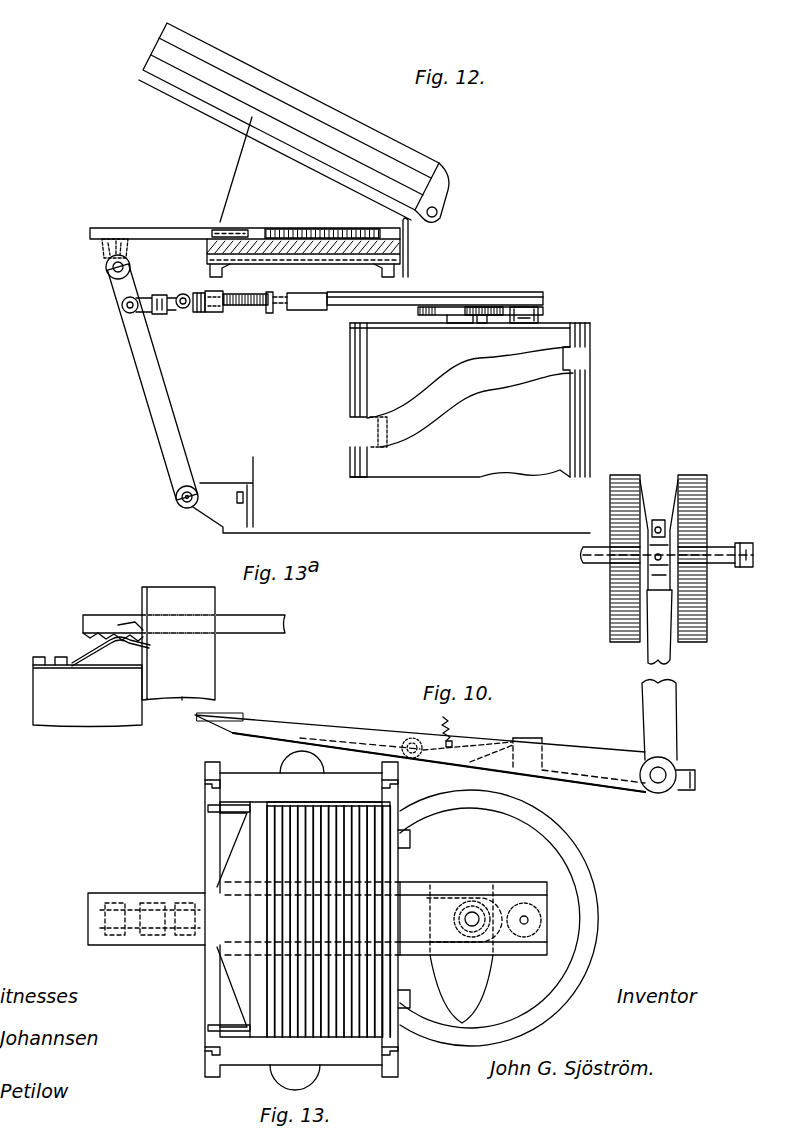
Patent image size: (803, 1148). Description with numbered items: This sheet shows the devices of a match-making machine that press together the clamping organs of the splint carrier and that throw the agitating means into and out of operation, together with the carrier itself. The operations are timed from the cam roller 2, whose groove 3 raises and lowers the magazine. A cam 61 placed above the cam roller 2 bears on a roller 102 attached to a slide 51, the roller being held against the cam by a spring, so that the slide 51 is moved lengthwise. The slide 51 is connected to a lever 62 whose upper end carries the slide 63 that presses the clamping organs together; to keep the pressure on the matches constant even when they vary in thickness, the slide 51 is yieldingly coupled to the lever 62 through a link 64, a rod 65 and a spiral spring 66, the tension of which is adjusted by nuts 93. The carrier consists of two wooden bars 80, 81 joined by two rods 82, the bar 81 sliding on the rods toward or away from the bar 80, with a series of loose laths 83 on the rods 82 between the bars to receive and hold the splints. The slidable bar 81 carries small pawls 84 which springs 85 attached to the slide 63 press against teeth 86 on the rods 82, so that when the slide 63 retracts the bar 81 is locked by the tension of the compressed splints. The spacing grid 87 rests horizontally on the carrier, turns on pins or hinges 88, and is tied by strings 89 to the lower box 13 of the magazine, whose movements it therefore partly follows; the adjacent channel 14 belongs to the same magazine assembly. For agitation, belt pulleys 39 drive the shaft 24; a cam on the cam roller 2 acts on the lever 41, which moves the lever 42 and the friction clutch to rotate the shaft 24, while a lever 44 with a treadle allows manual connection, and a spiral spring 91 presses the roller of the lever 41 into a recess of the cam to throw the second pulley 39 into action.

In FIG. 12, the cam roller 2 is at (470, 400).
In FIG. 13, the cam roller 2 is at (572, 837).
In FIG. 12, the groove 3 is at (470, 397).
In FIG. 12, the lower box of the magazine 13 is at (180, 83).
In FIG. 12, the channel 14 is at (283, 97).
In FIG. 10, the shaft 24 is at (593, 568).
In FIG. 10, the belt pulleys 39 is at (688, 473).
In FIG. 10, the lever 41 is at (482, 743).
In FIG. 10, the lever 42 is at (658, 697).
In FIG. 10, the lever having a treadle 44 is at (305, 733).
In FIG. 12, the slide 51 is at (441, 293).
In FIG. 13, the slide 51 is at (437, 877).
In FIG. 12, the cam 61 is at (483, 307).
In FIG. 13, the cam 61 is at (487, 993).
In FIG. 12, the lever 62 is at (145, 402).
In FIG. 12, the slide 63 is at (129, 228).
In FIG. 13A, the slide 63 is at (95, 720).
In FIG. 13, the slide 63 is at (123, 892).
In FIG. 12, the link 64 is at (168, 311).
In FIG. 12, the rod 65 is at (317, 311).
In FIG. 12, the spiral spring 66 is at (235, 307).
In FIG. 13, the wooden bar 80 is at (400, 803).
In FIG. 13A, the slidable bar 81 is at (182, 698).
In FIG. 13, the slidable bar 81 is at (258, 963).
In FIG. 13A, the rods 82 is at (283, 623).
In FIG. 13, the rods 82 is at (213, 812).
In FIG. 12, the loose laths 83 is at (307, 228).
In FIG. 13, the loose laths 83 is at (337, 1037).
In FIG. 13A, the pawls 84 is at (150, 643).
In FIG. 13A, the springs 85 is at (87, 648).
In FIG. 13A, the teeth 86 is at (103, 620).
In FIG. 12, the grid 87 is at (247, 228).
In FIG. 12, the pins or hinges 88 is at (410, 227).
In FIG. 12, the strings 89 is at (237, 157).
In FIG. 10, the spiral spring 91 is at (440, 722).
In FIG. 12, the nuts 93 is at (268, 313).
In FIG. 12, the roller 102 is at (543, 313).